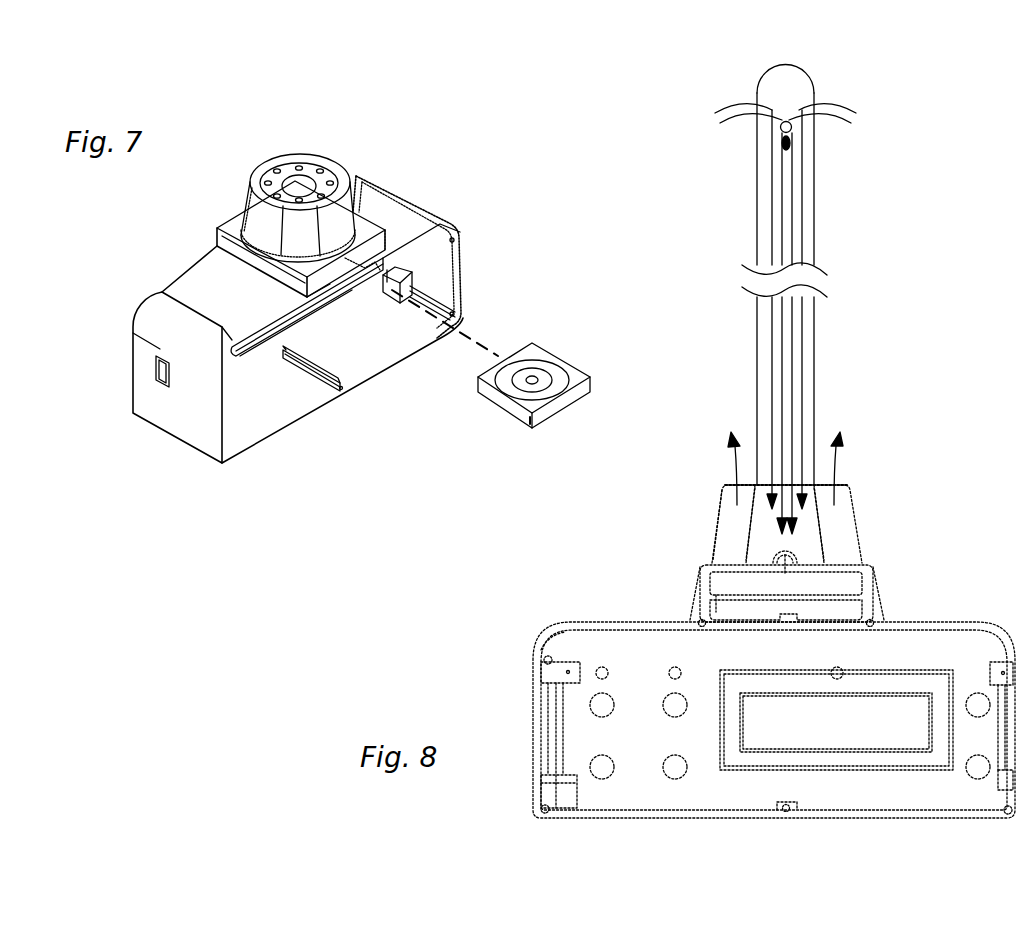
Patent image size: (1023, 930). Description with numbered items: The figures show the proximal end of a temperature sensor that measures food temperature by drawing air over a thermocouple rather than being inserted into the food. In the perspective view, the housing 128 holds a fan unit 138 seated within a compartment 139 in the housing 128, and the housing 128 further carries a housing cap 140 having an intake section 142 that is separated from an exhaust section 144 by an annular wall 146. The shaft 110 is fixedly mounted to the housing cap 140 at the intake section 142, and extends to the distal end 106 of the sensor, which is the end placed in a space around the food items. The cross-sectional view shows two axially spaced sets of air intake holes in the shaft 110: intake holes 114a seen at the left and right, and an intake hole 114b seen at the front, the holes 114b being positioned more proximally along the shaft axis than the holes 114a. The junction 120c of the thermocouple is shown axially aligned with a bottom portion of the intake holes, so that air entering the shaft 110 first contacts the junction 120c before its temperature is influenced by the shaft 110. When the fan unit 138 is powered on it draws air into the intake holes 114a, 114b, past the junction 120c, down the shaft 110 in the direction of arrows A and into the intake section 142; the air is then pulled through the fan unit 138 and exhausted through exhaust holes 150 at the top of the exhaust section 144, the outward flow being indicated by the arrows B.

In FIG. 8, the distal end 106 is at (770, 76).
In FIG. 8, the shaft 110 is at (815, 228).
In FIG. 8, the intake holes 114a is at (758, 113).
In FIG. 8, the intake holes 114b is at (788, 121).
In FIG. 8, the junction 120c is at (782, 147).
In FIG. 7, the housing 128 is at (400, 188).
In FIG. 8, the housing 128 is at (948, 622).
In FIG. 7, the fan unit 138 is at (577, 375).
In FIG. 8, the fan unit 138 is at (853, 585).
In FIG. 7, the compartment 139 is at (350, 262).
In FIG. 7, the housing cap 140 is at (250, 196).
In FIG. 8, the housing cap 140 is at (835, 490).
In FIG. 8, the intake section 142 is at (760, 546).
In FIG. 8, the exhaust section 144 is at (735, 517).
In FIG. 8, the annular wall 146 is at (822, 533).
In FIG. 7, the exhaust holes 150 is at (309, 168).
In FIG. 8, the exhaust holes 150 is at (738, 483).
In FIG. 8, the arrows A is at (800, 400).
In FIG. 8, the flow direction B is at (838, 462).